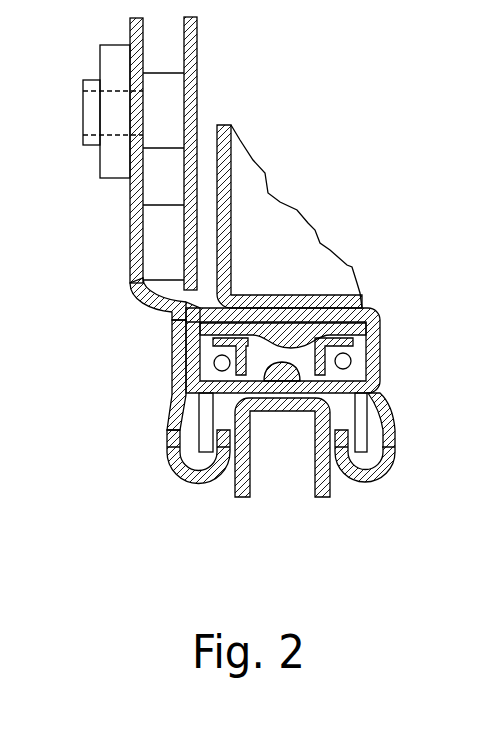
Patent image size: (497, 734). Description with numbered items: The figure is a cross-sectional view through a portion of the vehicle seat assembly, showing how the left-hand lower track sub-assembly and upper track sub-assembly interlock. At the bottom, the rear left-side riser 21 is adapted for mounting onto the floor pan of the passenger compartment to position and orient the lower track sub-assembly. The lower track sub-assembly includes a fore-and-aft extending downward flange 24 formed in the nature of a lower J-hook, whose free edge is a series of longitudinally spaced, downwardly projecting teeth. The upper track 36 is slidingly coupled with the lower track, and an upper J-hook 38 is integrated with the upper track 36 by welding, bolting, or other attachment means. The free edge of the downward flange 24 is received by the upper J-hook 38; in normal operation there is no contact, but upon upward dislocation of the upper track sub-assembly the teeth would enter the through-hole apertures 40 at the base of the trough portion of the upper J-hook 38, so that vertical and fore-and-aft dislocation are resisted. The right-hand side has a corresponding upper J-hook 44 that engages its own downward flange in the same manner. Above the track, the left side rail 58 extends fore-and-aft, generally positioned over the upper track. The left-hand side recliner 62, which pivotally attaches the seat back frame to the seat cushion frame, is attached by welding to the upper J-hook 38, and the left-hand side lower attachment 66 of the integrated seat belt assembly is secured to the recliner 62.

The rear left-side riser 21 is at (240, 496).
The downward flange 24 is at (199, 415).
The upper track 36 is at (382, 394).
The upper J-hook 38 is at (185, 300).
The through-hole apertures 40 is at (175, 478).
The upper J-hook 44 is at (178, 404).
The left side rail 58 is at (291, 262).
The left-hand side recliner 62 is at (132, 200).
The left-hand side lower attachment 66 is at (85, 118).